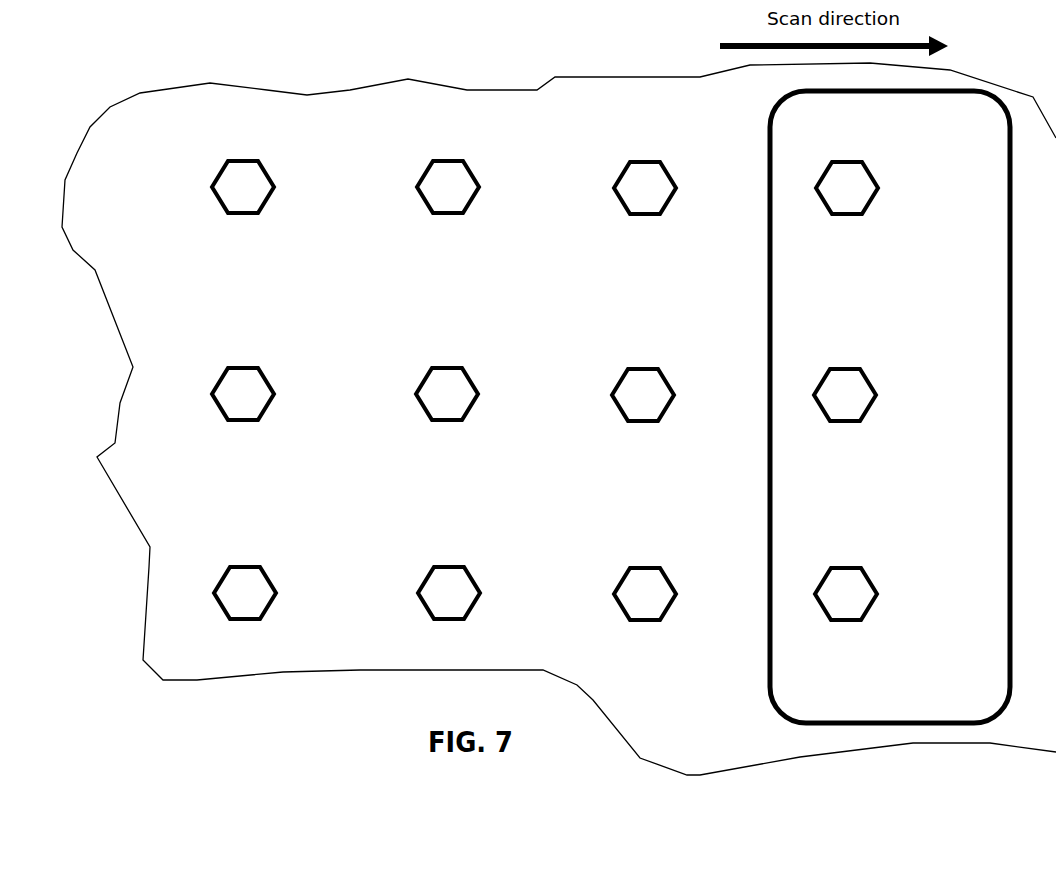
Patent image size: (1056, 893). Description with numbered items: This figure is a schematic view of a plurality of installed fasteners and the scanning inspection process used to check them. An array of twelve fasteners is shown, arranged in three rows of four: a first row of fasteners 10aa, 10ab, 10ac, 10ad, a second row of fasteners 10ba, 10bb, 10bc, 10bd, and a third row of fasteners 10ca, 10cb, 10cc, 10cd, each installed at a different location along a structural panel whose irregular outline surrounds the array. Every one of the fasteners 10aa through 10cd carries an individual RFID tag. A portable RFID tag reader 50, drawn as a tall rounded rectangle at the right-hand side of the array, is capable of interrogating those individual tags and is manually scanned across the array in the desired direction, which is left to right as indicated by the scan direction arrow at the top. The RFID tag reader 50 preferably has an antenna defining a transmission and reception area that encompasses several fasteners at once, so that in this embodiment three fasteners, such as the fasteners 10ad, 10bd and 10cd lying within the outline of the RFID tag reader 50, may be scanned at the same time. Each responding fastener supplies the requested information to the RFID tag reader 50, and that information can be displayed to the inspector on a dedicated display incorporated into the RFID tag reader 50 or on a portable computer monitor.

The fastener 10aa is at (244, 172).
The fastener 10ab is at (445, 175).
The fastener 10ac is at (638, 185).
The fastener 10ad is at (850, 188).
The fastener 10ba is at (240, 387).
The fastener 10bb is at (449, 383).
The fastener 10bc is at (647, 390).
The fastener 10bd is at (852, 385).
The fastener 10ca is at (245, 586).
The fastener 10cb is at (442, 587).
The fastener 10cc is at (645, 583).
The fastener 10cd is at (850, 587).
The RFID tag reader 50 is at (942, 687).